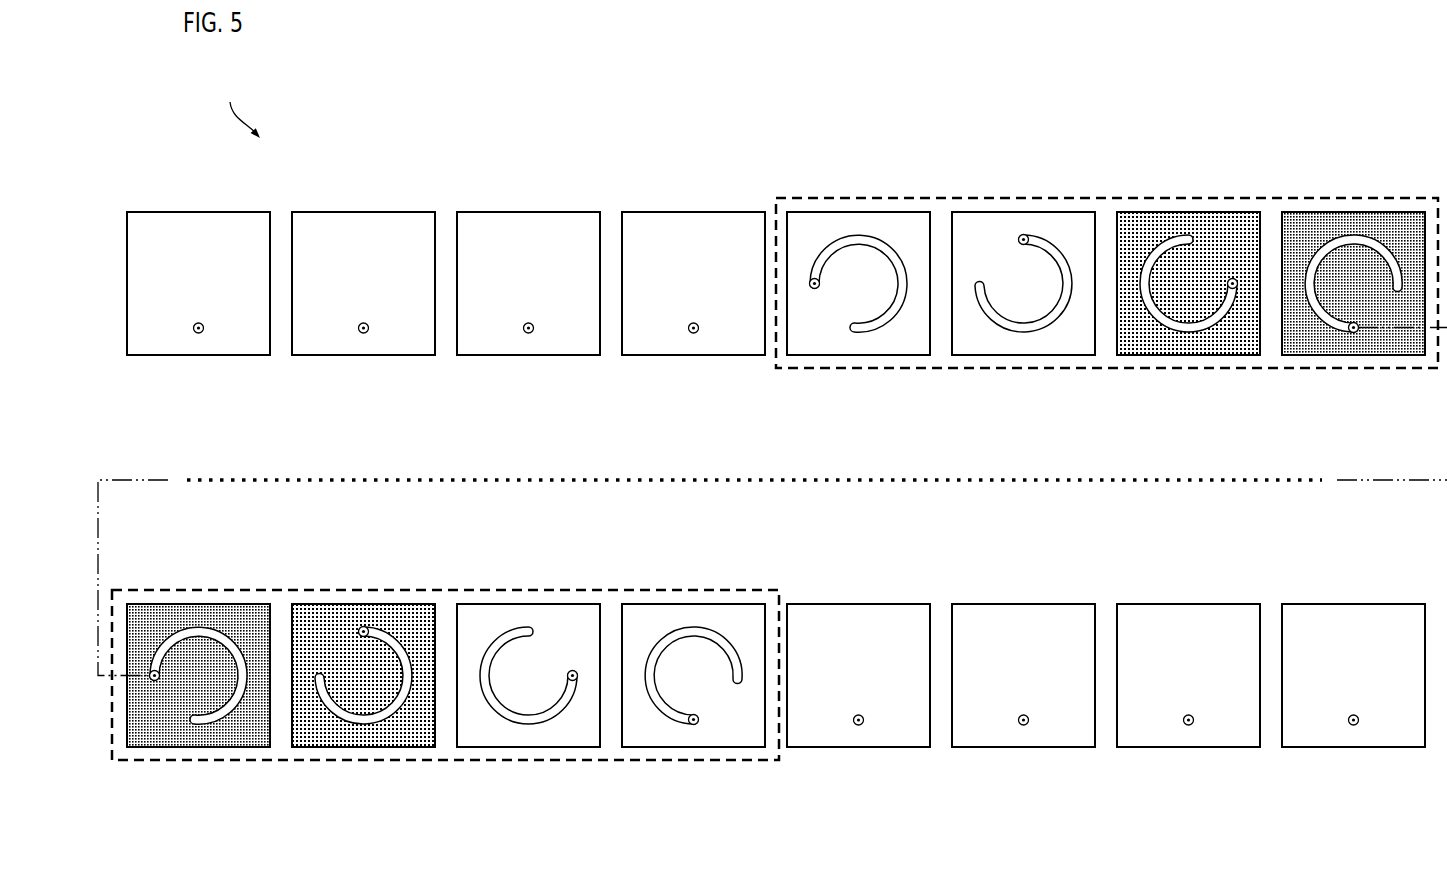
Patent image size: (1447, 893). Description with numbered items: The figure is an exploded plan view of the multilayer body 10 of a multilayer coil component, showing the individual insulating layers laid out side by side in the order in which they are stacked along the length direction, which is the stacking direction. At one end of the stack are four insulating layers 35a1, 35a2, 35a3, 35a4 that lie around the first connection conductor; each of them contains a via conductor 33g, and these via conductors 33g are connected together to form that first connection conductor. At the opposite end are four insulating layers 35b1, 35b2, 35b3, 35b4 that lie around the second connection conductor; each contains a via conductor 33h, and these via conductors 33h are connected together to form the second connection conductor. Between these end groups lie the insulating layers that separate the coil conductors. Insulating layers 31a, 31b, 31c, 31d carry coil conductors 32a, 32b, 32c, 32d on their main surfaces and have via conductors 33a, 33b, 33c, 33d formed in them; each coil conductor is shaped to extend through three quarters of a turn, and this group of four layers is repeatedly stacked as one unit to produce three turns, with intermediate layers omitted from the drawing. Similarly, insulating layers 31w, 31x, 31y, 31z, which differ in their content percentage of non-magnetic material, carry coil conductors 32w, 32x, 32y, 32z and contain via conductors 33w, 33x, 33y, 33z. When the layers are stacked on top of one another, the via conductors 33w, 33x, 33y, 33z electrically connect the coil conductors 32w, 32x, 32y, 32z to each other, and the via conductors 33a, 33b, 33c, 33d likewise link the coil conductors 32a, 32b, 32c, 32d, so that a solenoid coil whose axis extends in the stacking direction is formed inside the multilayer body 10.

The multilayer body 10 is at (247, 97).
The insulating layer 35a1 is at (182, 226).
The insulating layer 35a2 is at (347, 226).
The insulating layer 35a3 is at (512, 226).
The insulating layer 35a4 is at (677, 226).
The insulating layer 35b1 is at (1337, 618).
The insulating layer 35b2 is at (1172, 618).
The insulating layer 35b3 is at (1007, 618).
The insulating layer 35b4 is at (842, 618).
The via conductor 33g is at (198, 333).
The via conductor 33h is at (858, 725).
The insulating layer 31a is at (842, 226).
The insulating layer 31b is at (1007, 226).
The insulating layer 31c is at (1172, 226).
The insulating layer 31d is at (1337, 226).
The insulating layer 31w is at (182, 618).
The insulating layer 31x is at (347, 618).
The insulating layer 31y is at (512, 618).
The insulating layer 31z is at (677, 618).
The coil conductor 32a is at (880, 322).
The coil conductor 32b is at (1008, 328).
The coil conductor 32c is at (1175, 328).
The coil conductor 32d is at (1382, 253).
The coil conductor 32w is at (220, 714).
The coil conductor 32x is at (348, 720).
The coil conductor 32y is at (515, 720).
The coil conductor 32z is at (722, 645).
The via conductor 33a is at (814, 289).
The via conductor 33b is at (1024, 245).
The via conductor 33c is at (1233, 289).
The via conductor 33d is at (1350, 332).
The via conductor 33w is at (154, 681).
The via conductor 33x is at (364, 637).
The via conductor 33y is at (573, 681).
The via conductor 33z is at (690, 724).